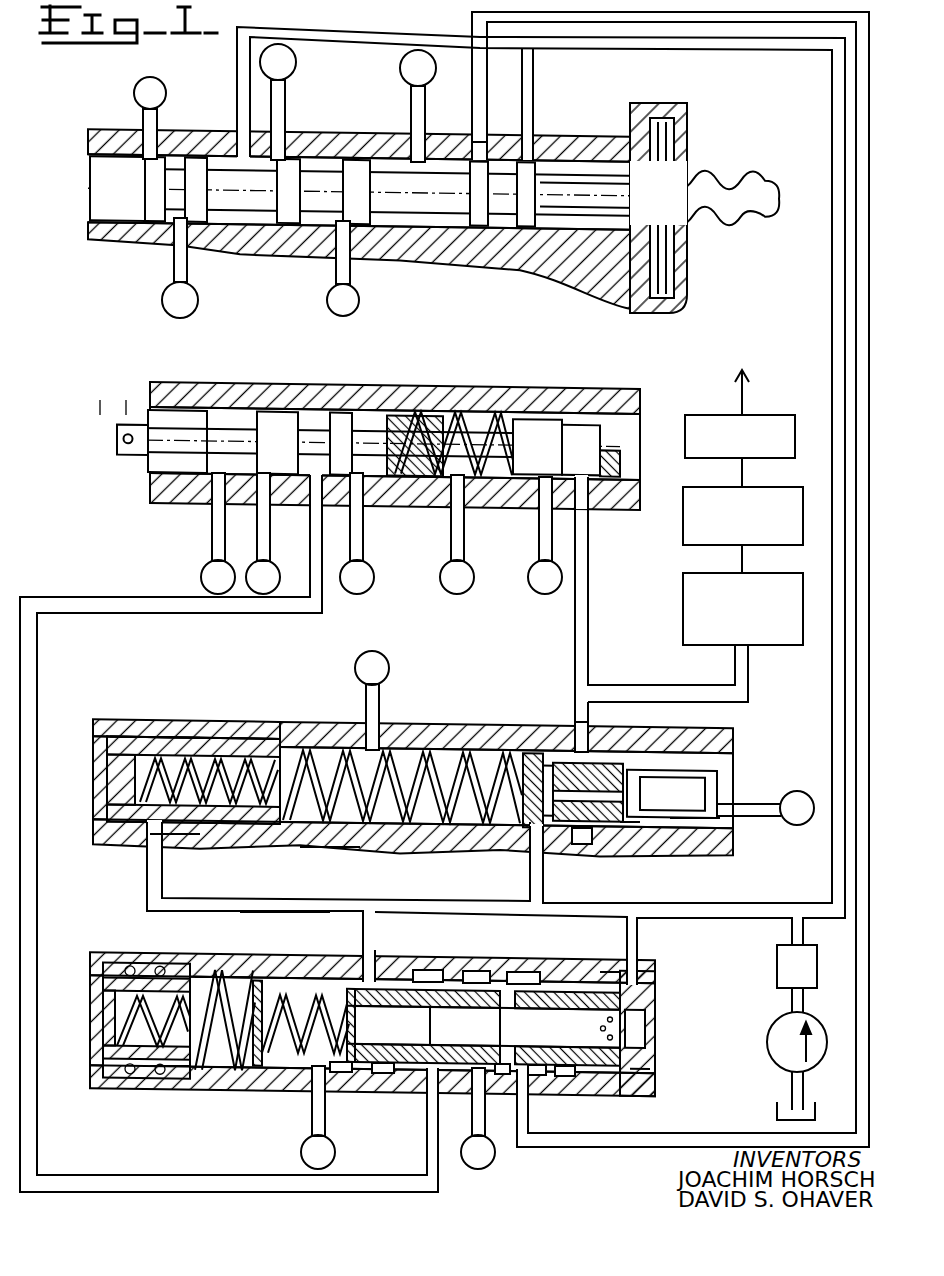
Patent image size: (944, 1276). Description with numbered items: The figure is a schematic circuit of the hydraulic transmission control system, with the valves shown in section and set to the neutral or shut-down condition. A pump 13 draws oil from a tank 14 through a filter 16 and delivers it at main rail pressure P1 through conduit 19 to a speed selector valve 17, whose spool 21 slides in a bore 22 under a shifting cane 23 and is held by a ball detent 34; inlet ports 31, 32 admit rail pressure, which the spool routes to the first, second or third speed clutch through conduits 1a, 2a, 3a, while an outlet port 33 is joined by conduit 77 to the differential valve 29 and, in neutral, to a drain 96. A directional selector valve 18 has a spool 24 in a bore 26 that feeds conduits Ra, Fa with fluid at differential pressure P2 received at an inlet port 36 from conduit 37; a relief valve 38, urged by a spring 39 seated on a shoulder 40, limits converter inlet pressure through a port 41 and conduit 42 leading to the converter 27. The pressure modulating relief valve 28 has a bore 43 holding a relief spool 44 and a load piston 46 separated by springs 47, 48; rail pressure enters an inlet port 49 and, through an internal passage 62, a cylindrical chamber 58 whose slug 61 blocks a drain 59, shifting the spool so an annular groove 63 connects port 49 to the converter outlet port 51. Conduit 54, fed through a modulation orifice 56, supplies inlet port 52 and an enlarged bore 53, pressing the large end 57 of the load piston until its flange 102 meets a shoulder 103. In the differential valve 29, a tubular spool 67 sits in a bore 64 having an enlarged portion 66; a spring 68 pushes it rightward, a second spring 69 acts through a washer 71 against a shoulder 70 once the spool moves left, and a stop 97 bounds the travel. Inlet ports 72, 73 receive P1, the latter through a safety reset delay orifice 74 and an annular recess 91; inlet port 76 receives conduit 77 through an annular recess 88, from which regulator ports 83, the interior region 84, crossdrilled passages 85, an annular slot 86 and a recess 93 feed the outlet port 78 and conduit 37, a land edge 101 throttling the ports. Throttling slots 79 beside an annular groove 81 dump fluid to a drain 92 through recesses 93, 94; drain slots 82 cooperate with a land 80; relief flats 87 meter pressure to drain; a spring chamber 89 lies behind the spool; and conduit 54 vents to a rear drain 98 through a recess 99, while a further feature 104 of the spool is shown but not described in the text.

The speed selector valve 17 is at (84, 187).
The ball detent 34 is at (696, 152).
The spool 21 is at (368, 192).
The bore 22 is at (563, 212).
The shifting cane 23 is at (780, 191).
The conduit 1a is at (190, 270).
The conduit 2a is at (287, 105).
The conduit 3a is at (409, 105).
The speed selector valve drain 96 is at (360, 302).
The inlet port 31 is at (238, 127).
The inlet port 32 is at (535, 139).
The conduit 19 is at (544, 48).
The outlet port 33 is at (472, 132).
The directional selector valve 18 is at (650, 400).
The spool 24 is at (368, 444).
The bore 26 is at (327, 443).
The shoulder 40 is at (388, 410).
The spring 39 is at (463, 403).
The relief valve 38 is at (556, 447).
The port 41 is at (595, 499).
The reverse gear conduit Ra is at (270, 537).
The forward gear conduit Fa is at (364, 550).
The inlet port 36 is at (330, 486).
The conduit 37 is at (176, 611).
The conduit 42 is at (625, 686).
The converter 27 is at (683, 617).
The pressure modulating relief valve 28 is at (728, 845).
The end of load piston 57 is at (93, 740).
The load piston bore shoulder 103 is at (195, 733).
The load piston flange 102 is at (130, 726).
The load piston 46 is at (240, 735).
The spring 47 is at (302, 741).
The spring 48 is at (402, 742).
The inlet port 49 is at (527, 844).
The outlet port 51 is at (570, 725).
The internal passage 62 is at (612, 736).
The slug 61 is at (672, 794).
The drain 59 is at (752, 800).
The inlet port 52 is at (147, 850).
The enlarged portion of bore 53 is at (178, 833).
The bore 43 is at (330, 843).
The annular groove 63 is at (578, 843).
The relief spool 44 is at (630, 843).
The cylindrical chamber 58 is at (690, 842).
The conduit 54 is at (291, 894).
The restricting modulation orifice 56 is at (440, 900).
The main rail pressure P1 is at (680, 908).
The safety reset delay orifice 74 is at (640, 923).
The differential valve 29 is at (84, 1017).
The enlarged portion 66 is at (118, 961).
The second spring 69 is at (166, 965).
The spring 68 is at (113, 1026).
The spring chamber 89 is at (255, 1080).
The washer 71 is at (230, 972).
The bore 64 is at (303, 1080).
The shoulder 70 is at (267, 986).
The land 104 is at (342, 980).
The drain slots 82 is at (483, 1027).
The annular recess 93 is at (447, 1026).
The throttling slots 79 is at (497, 1027).
The crossdrilled outlet passages 85 is at (567, 1028).
The interior region 84 is at (587, 1029).
The relief flats 87 is at (656, 980).
The ports 83 is at (648, 1012).
The annular recess 91 is at (656, 1058).
The inlet port 72 is at (377, 971).
The annular groove 81 is at (420, 971).
The annular slot 86 is at (501, 971).
The differential valve spool 67 is at (558, 971).
The inlet port 73 is at (620, 971).
The rear drain 98 is at (337, 1149).
The drain 92 is at (475, 1167).
The annular recess 94 is at (440, 1088).
The outlet port 78 is at (425, 1124).
The conduit 77 is at (557, 1144).
The land 80 is at (340, 1088).
The annular recess 99 is at (380, 1090).
The annular recess 88 is at (510, 1088).
The inlet port 76 is at (532, 1088).
The land edge 101 is at (568, 1090).
The stop 97 is at (180, 1086).
The differential pressure P2 is at (372, 1192).
The filter 16 is at (775, 966).
The pump 13 is at (766, 1032).
The tank 14 is at (775, 1107).